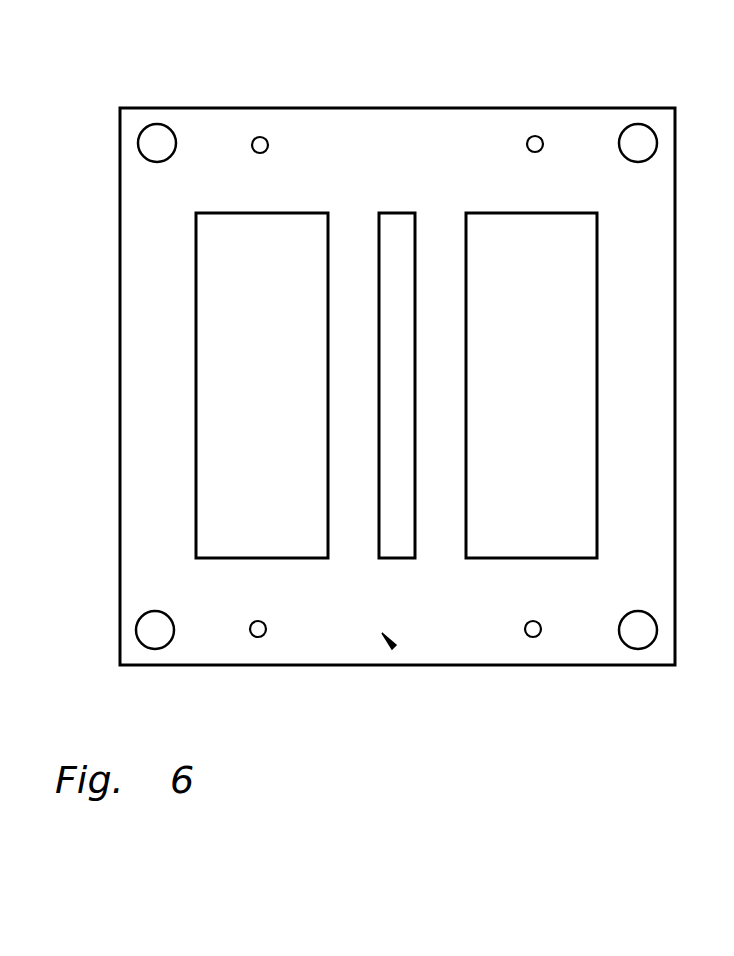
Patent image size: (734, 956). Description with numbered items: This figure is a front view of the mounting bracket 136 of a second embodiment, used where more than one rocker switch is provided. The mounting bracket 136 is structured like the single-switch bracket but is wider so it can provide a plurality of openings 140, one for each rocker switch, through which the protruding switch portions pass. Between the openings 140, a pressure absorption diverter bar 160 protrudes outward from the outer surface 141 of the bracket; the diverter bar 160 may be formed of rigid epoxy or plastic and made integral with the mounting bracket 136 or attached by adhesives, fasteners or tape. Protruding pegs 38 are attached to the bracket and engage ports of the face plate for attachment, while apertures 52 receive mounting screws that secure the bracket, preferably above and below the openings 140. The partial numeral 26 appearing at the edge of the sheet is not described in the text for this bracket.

The mounting bracket 136 is at (370, 176).
The openings 140 is at (280, 355).
The pressure absorption diverter bar 160 is at (398, 213).
The protruding pegs 38 is at (157, 143).
The apertures 52 is at (253, 140).
The outer surface 141 is at (391, 643).
The partial reference numeral 26 is at (718, 383).